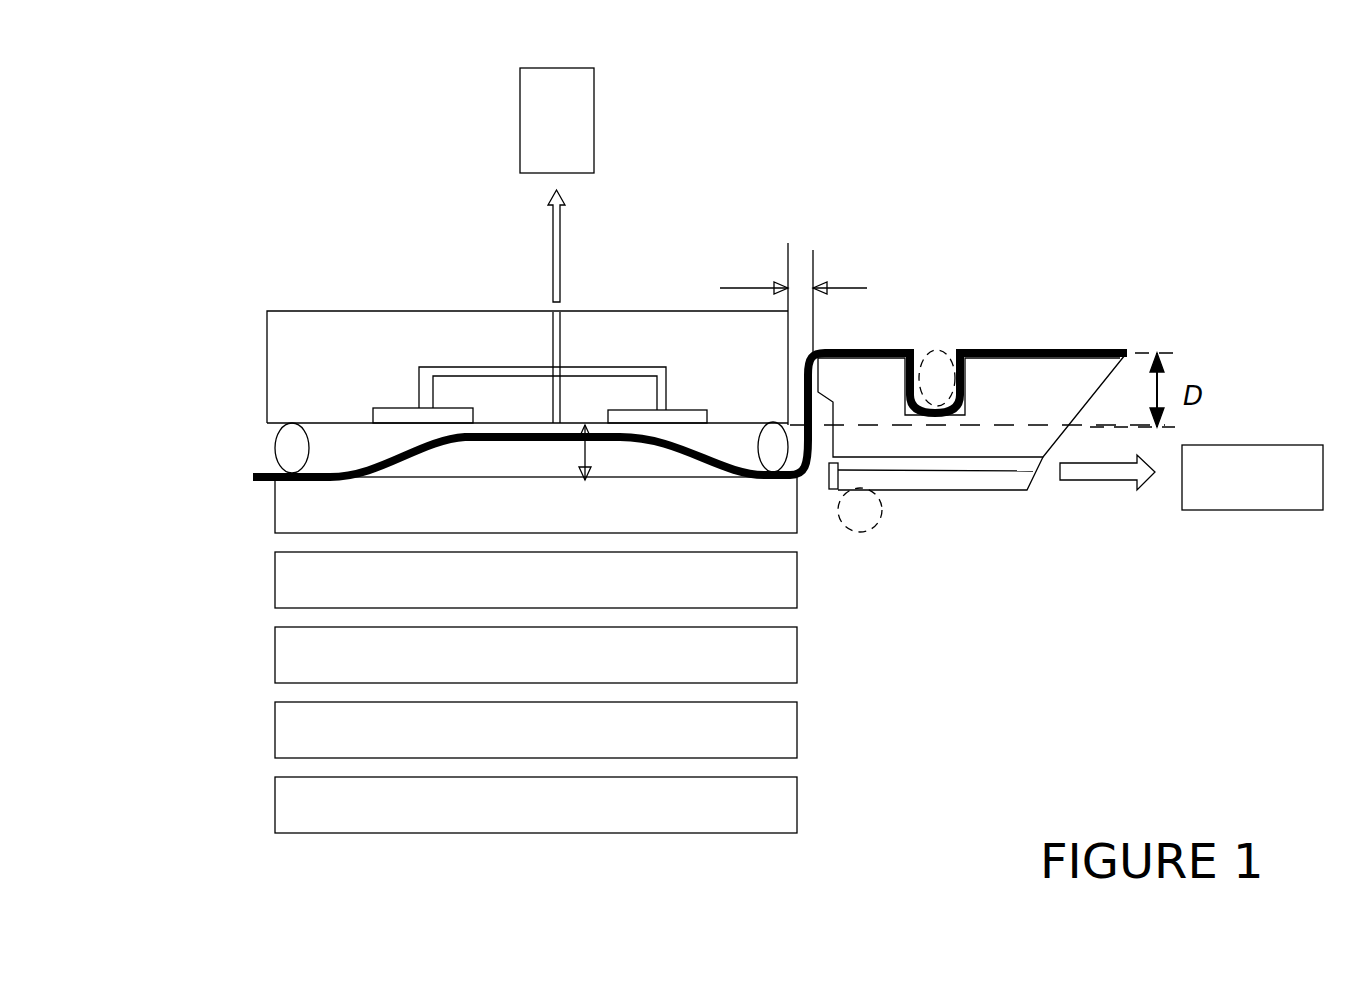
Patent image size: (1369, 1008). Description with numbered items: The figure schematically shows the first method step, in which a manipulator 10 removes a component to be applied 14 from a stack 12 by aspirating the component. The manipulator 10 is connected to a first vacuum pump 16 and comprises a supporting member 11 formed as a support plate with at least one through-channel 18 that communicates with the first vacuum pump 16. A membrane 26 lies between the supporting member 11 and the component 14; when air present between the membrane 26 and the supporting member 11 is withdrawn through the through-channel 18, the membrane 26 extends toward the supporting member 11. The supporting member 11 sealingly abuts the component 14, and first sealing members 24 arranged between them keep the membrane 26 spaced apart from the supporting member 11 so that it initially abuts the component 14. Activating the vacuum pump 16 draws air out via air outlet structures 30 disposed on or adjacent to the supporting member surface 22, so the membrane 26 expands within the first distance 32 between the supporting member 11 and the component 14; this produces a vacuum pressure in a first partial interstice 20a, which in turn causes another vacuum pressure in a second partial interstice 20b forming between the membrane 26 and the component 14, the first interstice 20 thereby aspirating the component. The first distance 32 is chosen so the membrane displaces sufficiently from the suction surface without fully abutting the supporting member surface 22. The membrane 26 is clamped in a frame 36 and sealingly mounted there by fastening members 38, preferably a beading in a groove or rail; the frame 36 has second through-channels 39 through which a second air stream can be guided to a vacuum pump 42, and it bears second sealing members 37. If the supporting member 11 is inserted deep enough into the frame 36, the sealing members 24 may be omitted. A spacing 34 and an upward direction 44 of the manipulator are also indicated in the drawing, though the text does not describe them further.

The manipulator 10 is at (395, 287).
The supporting member 11 is at (285, 338).
The stack 12 is at (812, 708).
The component to be applied 14 is at (275, 712).
The first vacuum pump 16 is at (577, 103).
The through-channel 18 is at (485, 372).
The first interstice 20 is at (675, 467).
The first partial interstice 20a is at (350, 445).
The second partial interstice 20b is at (463, 463).
The supporting member surface 22 is at (328, 422).
The first sealing member 24 is at (277, 448).
The membrane 26 is at (253, 472).
The air outlet structure 30 is at (392, 415).
The first distance 32 is at (592, 456).
The spacing 34 is at (793, 272).
The frame 36 is at (1005, 410).
The second sealing member 37 is at (883, 545).
The fastening member 38 is at (937, 350).
The second through-channel 39 is at (980, 465).
The vacuum pump 42 is at (1277, 458).
The actuation direction 44 is at (553, 252).